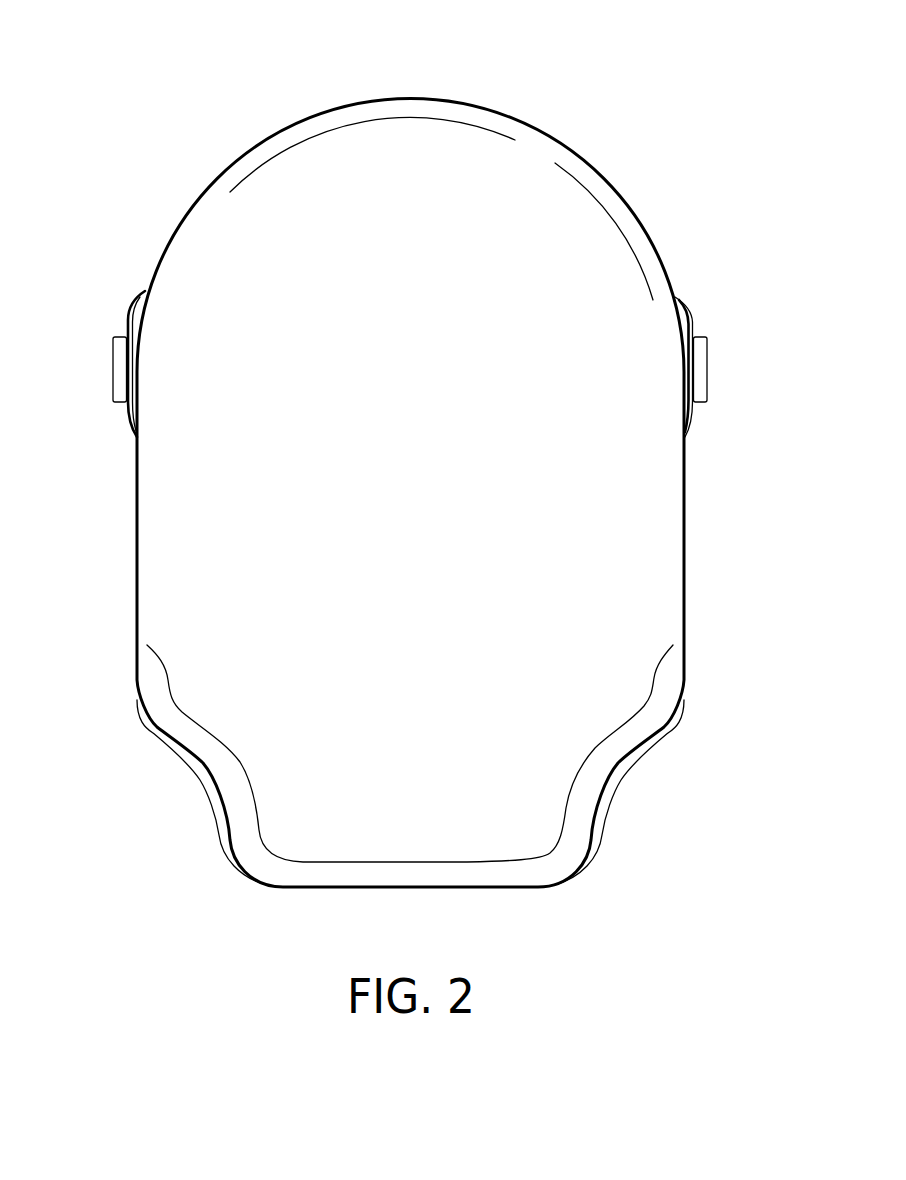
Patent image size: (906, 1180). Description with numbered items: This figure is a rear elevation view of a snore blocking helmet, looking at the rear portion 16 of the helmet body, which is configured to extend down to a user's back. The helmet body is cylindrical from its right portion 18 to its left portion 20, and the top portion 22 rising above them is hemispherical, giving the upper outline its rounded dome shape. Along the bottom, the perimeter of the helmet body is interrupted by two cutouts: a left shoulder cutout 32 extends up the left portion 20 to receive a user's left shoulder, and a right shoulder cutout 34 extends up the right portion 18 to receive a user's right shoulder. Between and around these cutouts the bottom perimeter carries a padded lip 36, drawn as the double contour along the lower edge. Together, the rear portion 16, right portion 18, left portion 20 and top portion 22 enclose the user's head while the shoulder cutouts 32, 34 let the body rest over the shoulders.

The rear portion 16 is at (565, 600).
The right portion 18 is at (684, 500).
The left portion 20 is at (137, 501).
The top portion 22 is at (410, 122).
The left shoulder cutout 32 is at (200, 768).
The right shoulder cutout 34 is at (620, 766).
The padded lip 36 is at (427, 877).